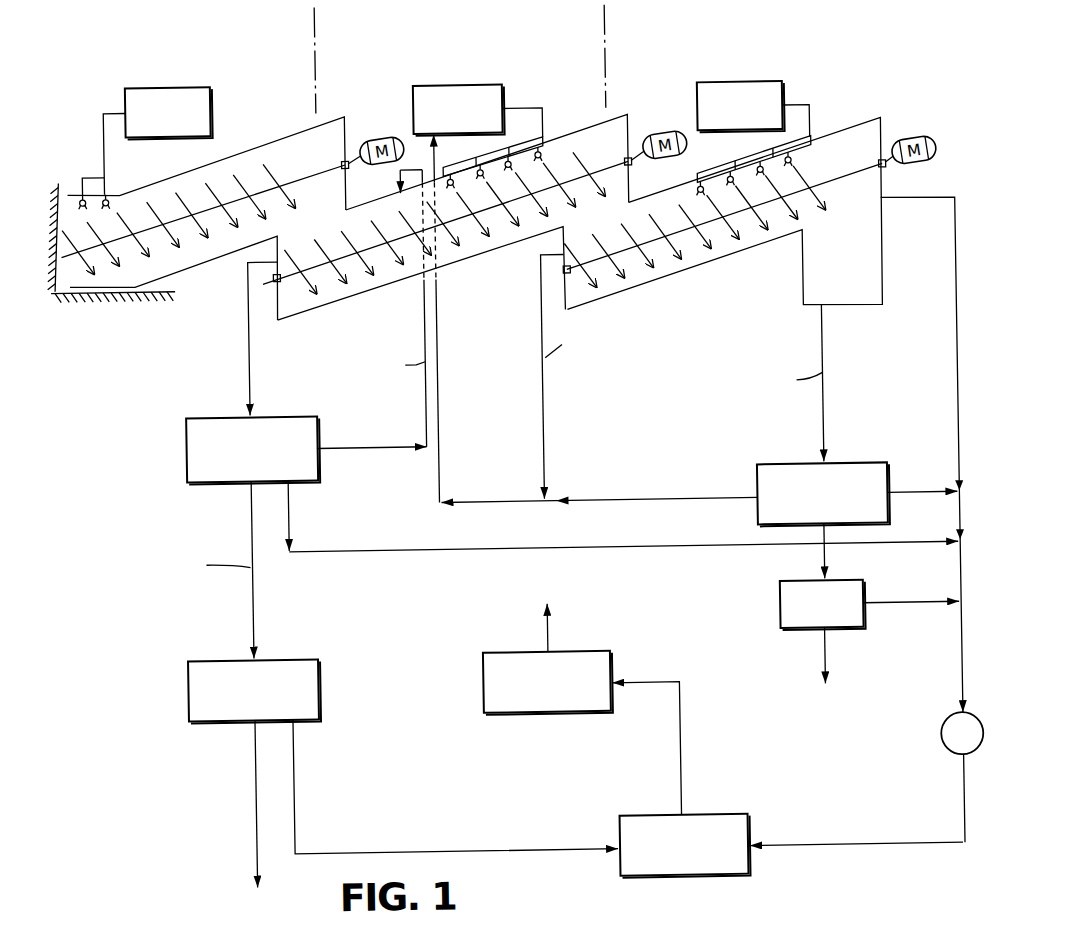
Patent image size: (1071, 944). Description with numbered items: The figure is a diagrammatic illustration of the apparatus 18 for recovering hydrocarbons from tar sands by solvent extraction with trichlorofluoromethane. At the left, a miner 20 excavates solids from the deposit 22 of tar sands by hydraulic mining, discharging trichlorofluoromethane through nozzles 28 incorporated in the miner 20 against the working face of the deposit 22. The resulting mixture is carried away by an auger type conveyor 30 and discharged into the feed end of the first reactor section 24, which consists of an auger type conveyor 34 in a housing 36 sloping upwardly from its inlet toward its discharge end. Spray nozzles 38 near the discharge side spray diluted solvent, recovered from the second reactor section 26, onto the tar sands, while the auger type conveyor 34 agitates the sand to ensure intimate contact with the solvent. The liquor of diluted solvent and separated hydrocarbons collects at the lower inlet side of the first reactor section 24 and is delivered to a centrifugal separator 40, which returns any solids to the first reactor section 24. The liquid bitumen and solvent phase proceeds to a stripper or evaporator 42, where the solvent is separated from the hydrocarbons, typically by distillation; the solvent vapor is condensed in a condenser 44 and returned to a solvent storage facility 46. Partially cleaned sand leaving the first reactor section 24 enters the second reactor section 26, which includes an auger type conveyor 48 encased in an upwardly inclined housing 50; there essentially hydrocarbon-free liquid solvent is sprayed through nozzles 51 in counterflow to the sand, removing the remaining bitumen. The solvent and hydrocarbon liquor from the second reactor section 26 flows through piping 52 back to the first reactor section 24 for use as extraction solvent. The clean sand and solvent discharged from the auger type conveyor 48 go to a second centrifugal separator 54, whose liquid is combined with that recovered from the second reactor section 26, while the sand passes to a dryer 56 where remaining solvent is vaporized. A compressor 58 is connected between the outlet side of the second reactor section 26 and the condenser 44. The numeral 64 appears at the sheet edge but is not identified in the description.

The apparatus 18 is at (847, 60).
The miner 20 is at (200, 270).
The deposit of tar sands 22 is at (55, 176).
The first reactor section 24 is at (506, 254).
The second reactor section 26 is at (698, 275).
The nozzles 28 is at (119, 190).
The auger type conveyor 30 is at (322, 170).
The auger type conveyor 34 is at (598, 158).
The housing 36 is at (394, 191).
The spray nozzles 38 is at (505, 158).
The centrifugal separator 40 is at (188, 419).
The stripper or evaporator 42 is at (185, 662).
The condenser 44 is at (742, 876).
The solvent storage facility 46 is at (561, 713).
The auger type conveyor 48 is at (818, 164).
The housing 50 is at (616, 294).
The nozzles 51 is at (752, 160).
The piping 52 is at (441, 431).
The second centrifugal separator 54 is at (873, 467).
The dryer 56 is at (778, 589).
The compressor 58 is at (938, 744).
The condenser line 64 is at (709, 937).